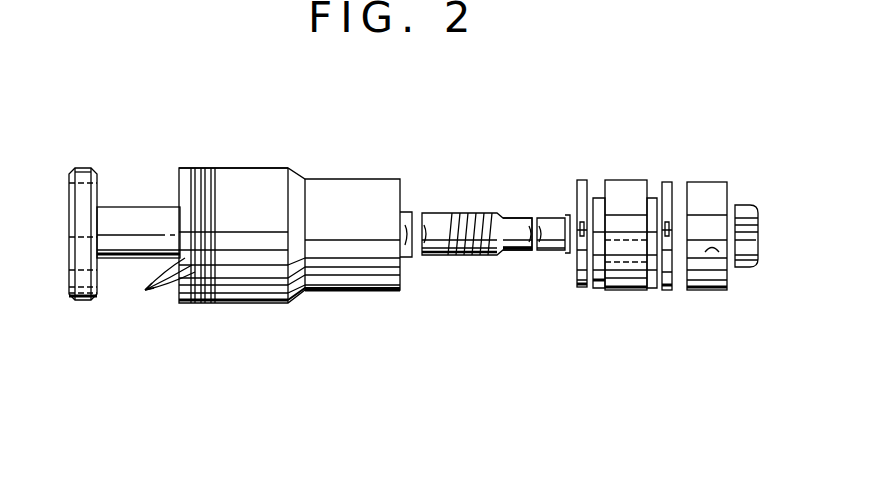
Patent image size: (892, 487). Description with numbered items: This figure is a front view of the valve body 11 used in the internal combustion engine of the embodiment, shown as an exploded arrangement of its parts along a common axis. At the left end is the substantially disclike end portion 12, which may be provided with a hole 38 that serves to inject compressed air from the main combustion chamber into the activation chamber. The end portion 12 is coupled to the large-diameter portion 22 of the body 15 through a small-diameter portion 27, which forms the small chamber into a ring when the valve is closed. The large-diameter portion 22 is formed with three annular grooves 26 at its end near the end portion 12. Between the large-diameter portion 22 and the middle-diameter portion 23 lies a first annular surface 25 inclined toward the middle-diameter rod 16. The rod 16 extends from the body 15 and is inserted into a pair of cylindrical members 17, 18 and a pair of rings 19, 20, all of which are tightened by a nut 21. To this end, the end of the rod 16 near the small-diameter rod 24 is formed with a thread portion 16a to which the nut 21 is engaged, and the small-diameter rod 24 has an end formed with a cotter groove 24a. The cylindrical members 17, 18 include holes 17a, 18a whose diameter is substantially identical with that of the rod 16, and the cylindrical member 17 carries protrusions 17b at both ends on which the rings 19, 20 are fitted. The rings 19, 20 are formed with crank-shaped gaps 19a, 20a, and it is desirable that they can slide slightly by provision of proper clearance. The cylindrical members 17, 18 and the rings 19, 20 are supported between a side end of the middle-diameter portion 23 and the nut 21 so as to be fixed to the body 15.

The valve body 11 is at (293, 152).
The end portion 12 is at (90, 305).
The body 15 is at (242, 166).
The middle-diameter rod 16 is at (436, 212).
The thread portion 16a is at (462, 256).
The cylindrical member 17 is at (602, 280).
The hole 17a is at (628, 290).
The protrusions 17b is at (597, 284).
The cylindrical member 18 is at (705, 290).
The hole 18a is at (720, 284).
The ring 19 is at (581, 180).
The crank-shaped gap 19a is at (578, 250).
The ring 20 is at (633, 178).
The crank-shaped gap 20a is at (672, 228).
The nut 21 is at (745, 268).
The large-diameter portion 22 is at (243, 305).
The middle-diameter portion 23 is at (366, 292).
The small-diameter rod 24 is at (518, 254).
The cotter groove 24a is at (562, 218).
The first annular surface 25 is at (300, 296).
The annular grooves 26 is at (165, 289).
The small-diameter portion 27 is at (148, 206).
The hole 38 is at (86, 168).